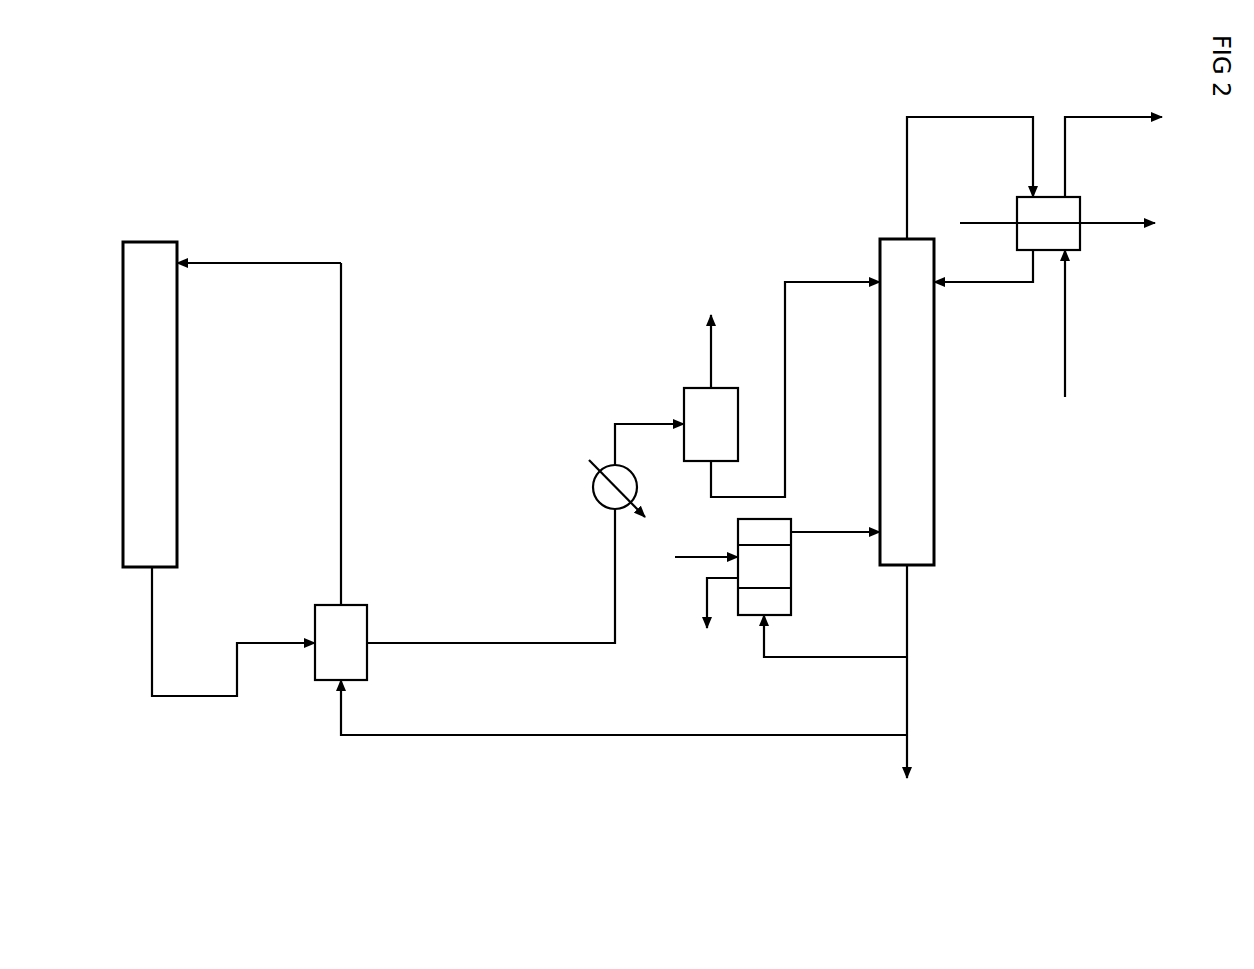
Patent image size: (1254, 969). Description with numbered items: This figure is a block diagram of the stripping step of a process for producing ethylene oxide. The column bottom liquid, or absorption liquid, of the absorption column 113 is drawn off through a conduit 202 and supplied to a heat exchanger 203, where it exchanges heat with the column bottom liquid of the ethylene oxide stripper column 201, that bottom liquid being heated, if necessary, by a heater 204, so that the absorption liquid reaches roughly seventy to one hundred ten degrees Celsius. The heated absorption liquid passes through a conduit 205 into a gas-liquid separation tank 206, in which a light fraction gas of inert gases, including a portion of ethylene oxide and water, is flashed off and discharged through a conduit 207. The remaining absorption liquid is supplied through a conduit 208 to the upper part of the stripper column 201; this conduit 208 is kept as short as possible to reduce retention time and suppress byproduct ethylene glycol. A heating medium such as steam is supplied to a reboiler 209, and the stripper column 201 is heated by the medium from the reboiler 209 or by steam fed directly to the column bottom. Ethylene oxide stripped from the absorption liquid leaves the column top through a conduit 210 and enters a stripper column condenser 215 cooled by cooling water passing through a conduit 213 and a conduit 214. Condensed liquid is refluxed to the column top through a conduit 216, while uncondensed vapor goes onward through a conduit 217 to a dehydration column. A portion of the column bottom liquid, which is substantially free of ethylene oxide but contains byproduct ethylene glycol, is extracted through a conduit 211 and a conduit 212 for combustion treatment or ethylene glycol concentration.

The absorption column 113 is at (177, 474).
The ethylene oxide stripper column 201 is at (934, 472).
The conduit 202 is at (152, 625).
The heat exchanger 203 is at (315, 612).
The heater 204 is at (593, 488).
The conduit 205 is at (441, 643).
The gas-liquid separation tank 206 is at (684, 393).
The conduit 207 is at (711, 338).
The conduit 208 is at (797, 282).
The reboiler 209 is at (791, 595).
The conduit 210 is at (997, 116).
The conduit 211 is at (907, 672).
The conduit 212 is at (907, 757).
The conduit 213 is at (964, 221).
The conduit 214 is at (1130, 221).
The stripper column condenser 215 is at (1046, 253).
The conduit 216 is at (985, 284).
The conduit 217 is at (1117, 116).